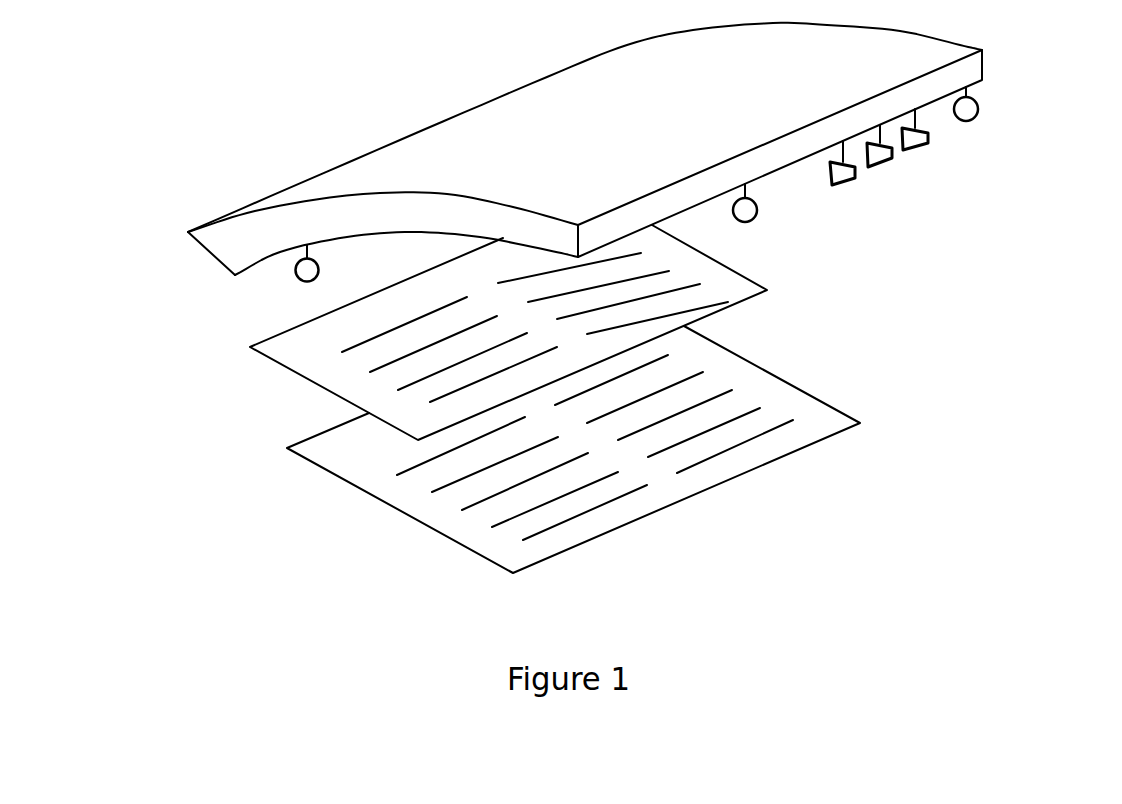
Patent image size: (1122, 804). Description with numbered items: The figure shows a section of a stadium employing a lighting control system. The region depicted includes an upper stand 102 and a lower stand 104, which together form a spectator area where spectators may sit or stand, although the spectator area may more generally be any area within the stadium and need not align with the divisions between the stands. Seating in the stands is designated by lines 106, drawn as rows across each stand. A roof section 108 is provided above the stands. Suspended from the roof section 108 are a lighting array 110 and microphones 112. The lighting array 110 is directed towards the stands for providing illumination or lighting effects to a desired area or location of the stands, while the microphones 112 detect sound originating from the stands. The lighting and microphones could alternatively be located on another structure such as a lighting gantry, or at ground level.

The upper stand 102 is at (333, 380).
The lower stand 104 is at (380, 490).
The seating lines 106 is at (737, 447).
The roof section 108 is at (577, 90).
The lighting array 110 is at (888, 168).
The microphones 112 is at (297, 287).